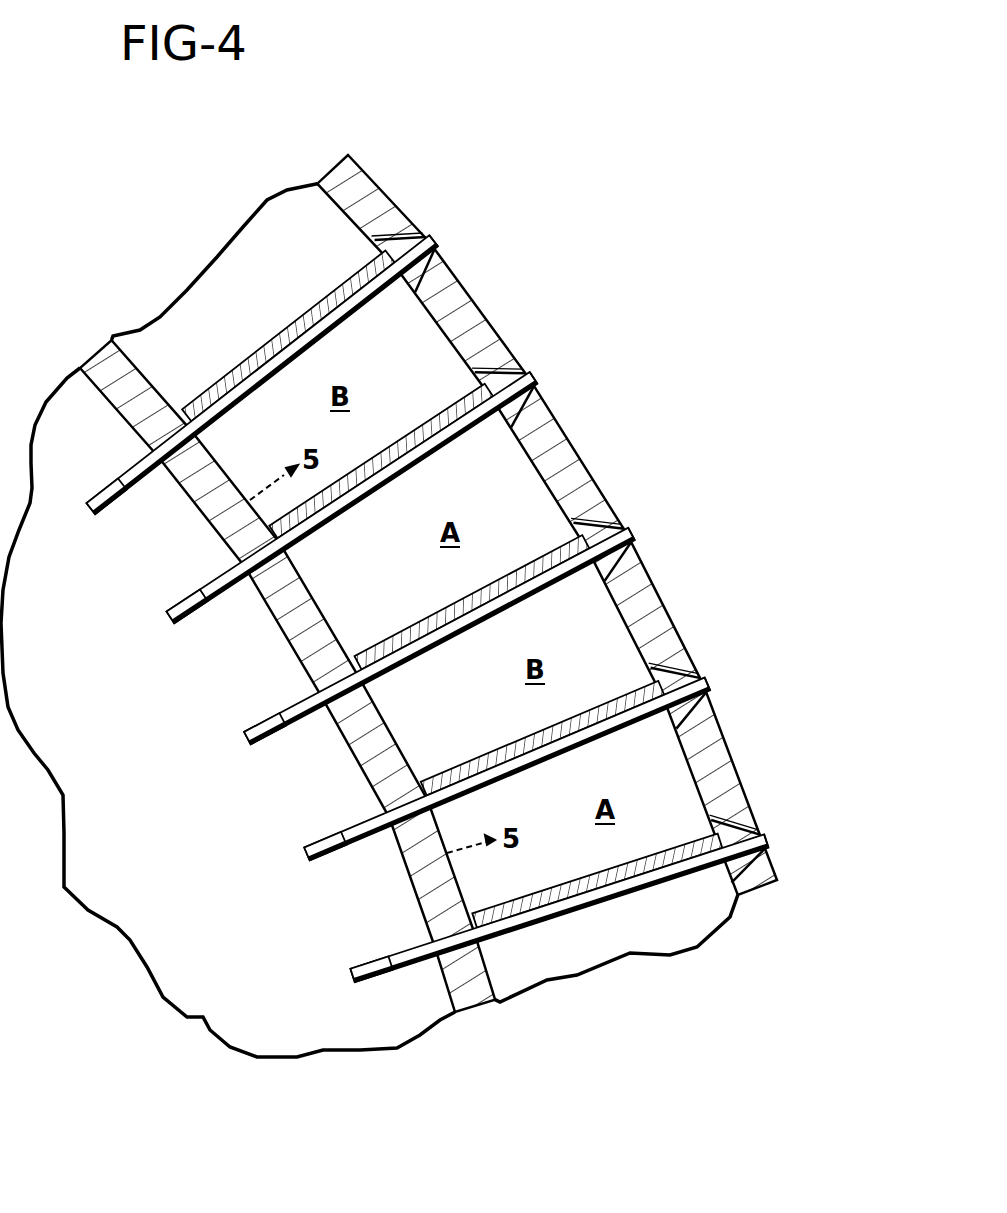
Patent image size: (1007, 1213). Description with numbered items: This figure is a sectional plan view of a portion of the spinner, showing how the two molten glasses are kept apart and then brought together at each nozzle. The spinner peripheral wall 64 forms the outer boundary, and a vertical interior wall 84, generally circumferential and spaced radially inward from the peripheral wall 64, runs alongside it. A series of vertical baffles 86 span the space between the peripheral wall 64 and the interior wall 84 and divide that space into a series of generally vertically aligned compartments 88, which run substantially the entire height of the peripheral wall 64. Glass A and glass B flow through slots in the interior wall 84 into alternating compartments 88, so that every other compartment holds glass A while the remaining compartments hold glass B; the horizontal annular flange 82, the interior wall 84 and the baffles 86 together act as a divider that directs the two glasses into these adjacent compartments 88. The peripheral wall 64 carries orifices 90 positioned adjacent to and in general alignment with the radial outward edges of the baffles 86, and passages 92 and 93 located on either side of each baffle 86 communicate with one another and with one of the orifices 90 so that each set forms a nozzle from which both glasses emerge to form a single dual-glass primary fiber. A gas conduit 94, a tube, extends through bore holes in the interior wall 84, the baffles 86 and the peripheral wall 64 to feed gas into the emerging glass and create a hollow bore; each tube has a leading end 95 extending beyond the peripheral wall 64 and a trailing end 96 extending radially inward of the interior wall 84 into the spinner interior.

The spinner peripheral wall 64 is at (587, 452).
The horizontal annular flange 82 is at (127, 848).
The vertical interior wall 84 is at (284, 634).
The vertical baffles 86 is at (243, 368).
The compartments 88 is at (378, 357).
The orifices 90 is at (426, 232).
The passage 92 is at (416, 272).
The passage 93 is at (388, 236).
The gas conduit 94 is at (127, 492).
The leading end 95 is at (438, 238).
The trailing end 96 is at (90, 512).